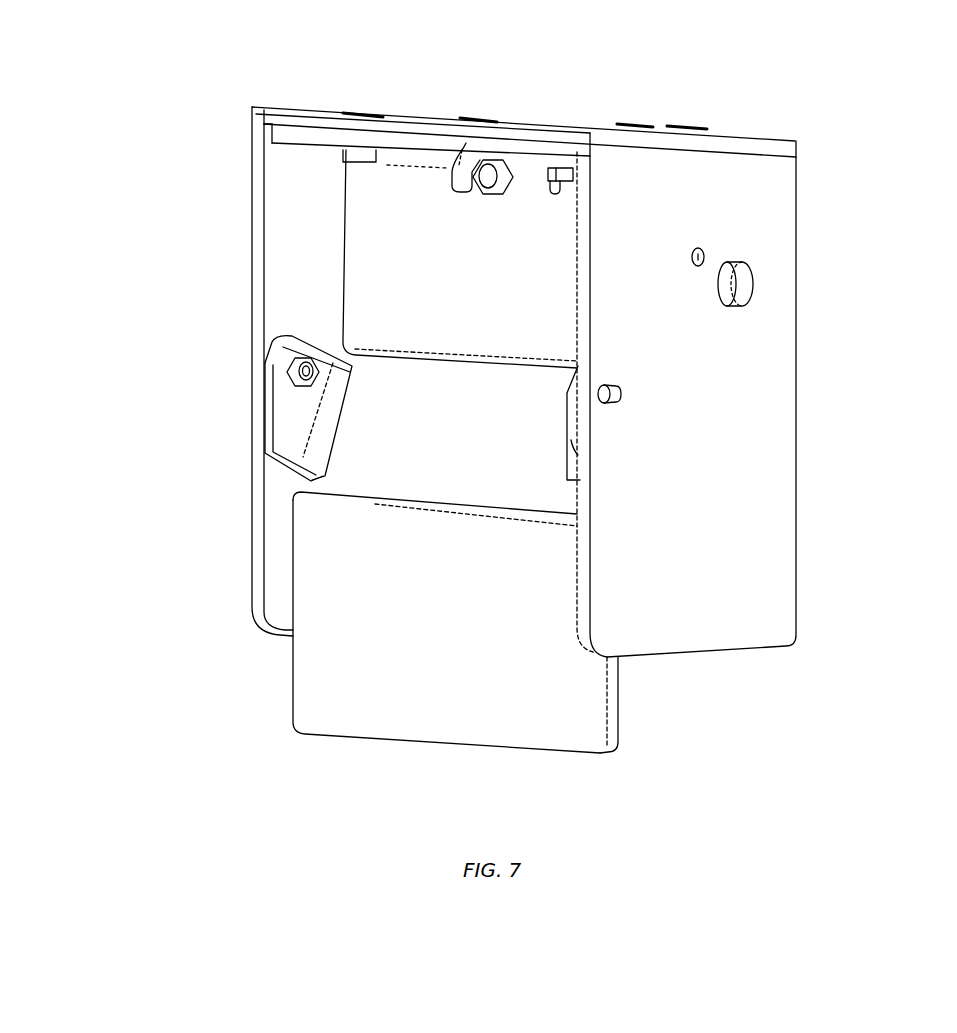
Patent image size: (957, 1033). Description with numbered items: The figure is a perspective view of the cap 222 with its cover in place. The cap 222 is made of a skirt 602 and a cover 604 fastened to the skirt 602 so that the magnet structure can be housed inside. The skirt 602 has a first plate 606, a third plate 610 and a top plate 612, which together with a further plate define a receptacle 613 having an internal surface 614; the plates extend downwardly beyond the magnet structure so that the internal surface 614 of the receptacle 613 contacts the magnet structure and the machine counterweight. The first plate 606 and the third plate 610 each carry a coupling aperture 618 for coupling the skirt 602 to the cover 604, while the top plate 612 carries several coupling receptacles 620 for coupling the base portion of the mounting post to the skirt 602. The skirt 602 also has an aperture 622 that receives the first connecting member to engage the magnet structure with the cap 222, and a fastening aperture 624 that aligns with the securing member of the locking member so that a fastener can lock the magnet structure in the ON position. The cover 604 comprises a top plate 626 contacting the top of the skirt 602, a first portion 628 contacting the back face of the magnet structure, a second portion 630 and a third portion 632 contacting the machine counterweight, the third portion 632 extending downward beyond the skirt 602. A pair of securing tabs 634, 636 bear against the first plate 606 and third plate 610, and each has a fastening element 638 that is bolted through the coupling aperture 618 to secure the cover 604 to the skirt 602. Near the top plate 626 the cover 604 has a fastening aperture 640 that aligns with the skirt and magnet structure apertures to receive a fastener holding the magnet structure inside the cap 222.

The cap 222 is at (848, 88).
The skirt 602 is at (800, 198).
The cover 604 is at (283, 673).
The first plate 606 is at (753, 437).
The third plate 610 is at (287, 256).
The top plate 612 is at (620, 127).
The receptacle 613 is at (298, 192).
The internal surface 614 is at (288, 167).
The coupling aperture 618 is at (622, 396).
The coupling receptacles 620 is at (367, 113).
The aperture 622 is at (745, 284).
The fastening aperture 624 is at (706, 260).
The top plate 626 is at (527, 152).
The first portion 628 is at (345, 218).
The second portion 630 is at (390, 447).
The third portion 632 is at (613, 695).
The securing tab 634 is at (580, 463).
The securing tab 636 is at (288, 422).
The fastening element 638 is at (290, 366).
The fastening aperture 640 is at (453, 140).